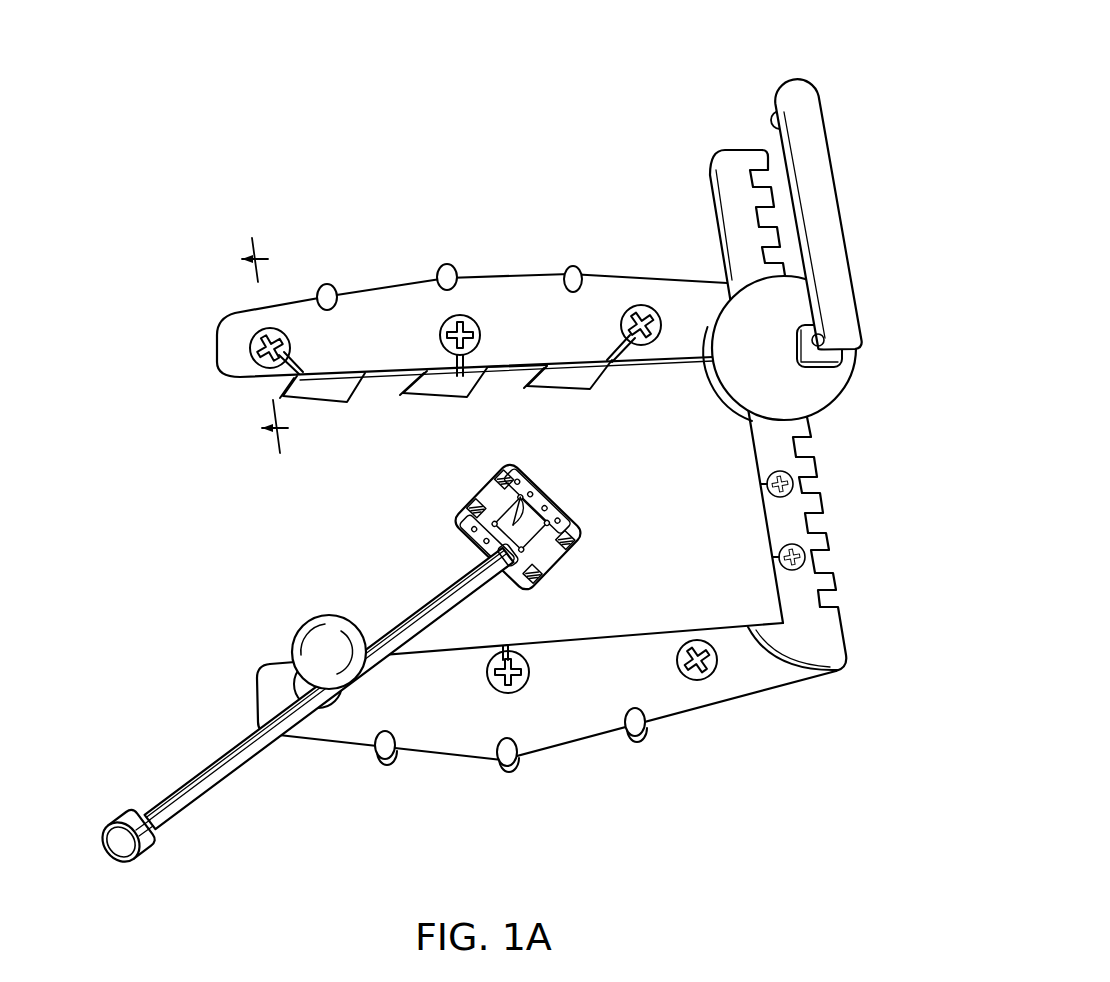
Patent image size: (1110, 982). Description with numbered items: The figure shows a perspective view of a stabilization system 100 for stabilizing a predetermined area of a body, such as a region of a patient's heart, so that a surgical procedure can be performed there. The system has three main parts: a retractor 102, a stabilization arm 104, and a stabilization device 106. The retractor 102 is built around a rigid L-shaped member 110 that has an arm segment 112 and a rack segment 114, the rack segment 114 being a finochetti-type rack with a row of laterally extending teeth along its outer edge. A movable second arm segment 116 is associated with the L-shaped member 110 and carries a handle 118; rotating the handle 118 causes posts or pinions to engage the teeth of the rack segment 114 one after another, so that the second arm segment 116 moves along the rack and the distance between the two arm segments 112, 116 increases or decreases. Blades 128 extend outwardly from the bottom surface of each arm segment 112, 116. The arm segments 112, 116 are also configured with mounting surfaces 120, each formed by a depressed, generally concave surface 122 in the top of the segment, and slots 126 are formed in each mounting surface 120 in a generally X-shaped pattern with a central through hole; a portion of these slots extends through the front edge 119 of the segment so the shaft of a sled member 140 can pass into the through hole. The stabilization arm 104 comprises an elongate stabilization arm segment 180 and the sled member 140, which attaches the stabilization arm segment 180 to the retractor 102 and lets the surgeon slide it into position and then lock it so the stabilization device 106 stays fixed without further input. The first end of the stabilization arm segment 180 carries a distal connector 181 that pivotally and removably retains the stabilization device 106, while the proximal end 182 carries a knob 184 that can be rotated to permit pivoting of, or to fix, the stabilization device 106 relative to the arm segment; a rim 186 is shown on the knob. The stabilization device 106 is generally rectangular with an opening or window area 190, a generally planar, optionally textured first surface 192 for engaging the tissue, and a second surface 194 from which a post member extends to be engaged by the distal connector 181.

The stabilization system 100 is at (553, 92).
The retractor 102 is at (750, 62).
The stabilization arm 104 is at (240, 563).
The stabilization device 106 is at (560, 505).
The L-shaped member 110 is at (838, 712).
The arm segment 112 is at (566, 757).
The rack segment 114 is at (823, 498).
The second arm segment 116 is at (390, 279).
The handle 118 is at (840, 209).
The front edge 119 is at (505, 373).
The mounting surface 120 is at (659, 375).
The concave surface 122 is at (693, 652).
The slots 126 is at (668, 636).
The blades 128 is at (330, 398).
The sled member 140 is at (284, 629).
The stabilization arm segment 180 is at (194, 780).
The distal connector 181 is at (452, 565).
The proximal end 182 is at (180, 808).
The knob 184 is at (105, 827).
The knob rim 186 is at (162, 826).
The window area 190 is at (520, 523).
The first surface 192 is at (549, 556).
The second surface 194 is at (490, 494).